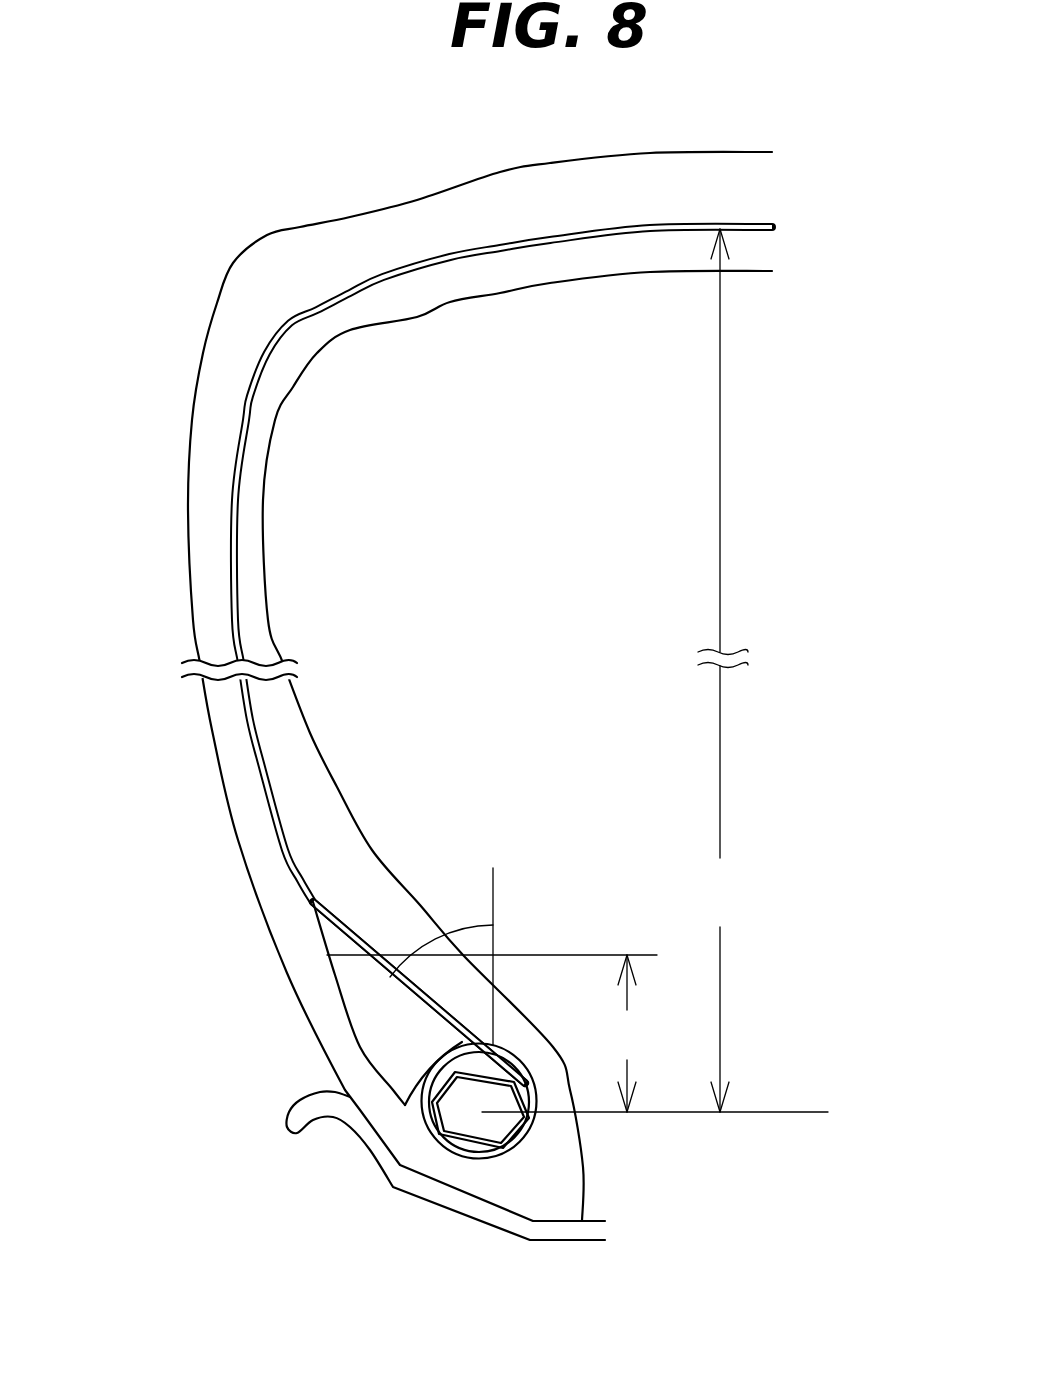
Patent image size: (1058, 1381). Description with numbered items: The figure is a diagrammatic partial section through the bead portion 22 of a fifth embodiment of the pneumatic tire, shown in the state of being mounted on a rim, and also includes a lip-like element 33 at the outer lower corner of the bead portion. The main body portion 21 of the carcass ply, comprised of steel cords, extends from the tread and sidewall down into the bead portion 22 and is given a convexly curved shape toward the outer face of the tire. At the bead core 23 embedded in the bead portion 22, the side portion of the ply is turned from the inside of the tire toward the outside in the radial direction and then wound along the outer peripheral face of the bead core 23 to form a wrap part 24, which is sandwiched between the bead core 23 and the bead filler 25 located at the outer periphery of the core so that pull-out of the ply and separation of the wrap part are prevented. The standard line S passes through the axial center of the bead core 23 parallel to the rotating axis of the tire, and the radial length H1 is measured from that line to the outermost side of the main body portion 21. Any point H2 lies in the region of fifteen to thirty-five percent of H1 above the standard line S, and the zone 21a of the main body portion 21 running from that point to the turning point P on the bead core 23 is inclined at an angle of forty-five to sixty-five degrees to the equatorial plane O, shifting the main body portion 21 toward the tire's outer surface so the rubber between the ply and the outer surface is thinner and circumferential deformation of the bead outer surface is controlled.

The main body portion of carcass ply 21 is at (268, 767).
The zone of main body portion 21a is at (452, 1015).
The bead portion 22 is at (308, 1025).
The bead core 23 is at (478, 1127).
The wrap part 24 is at (443, 1067).
The bead filler 25 is at (370, 992).
The lip portion 33 is at (332, 1107).
The equatorial plane O is at (493, 890).
The turning point P is at (520, 1080).
The standard line S is at (753, 1112).
The radial length H1 is at (723, 670).
The radial height of any point H2 is at (634, 1033).